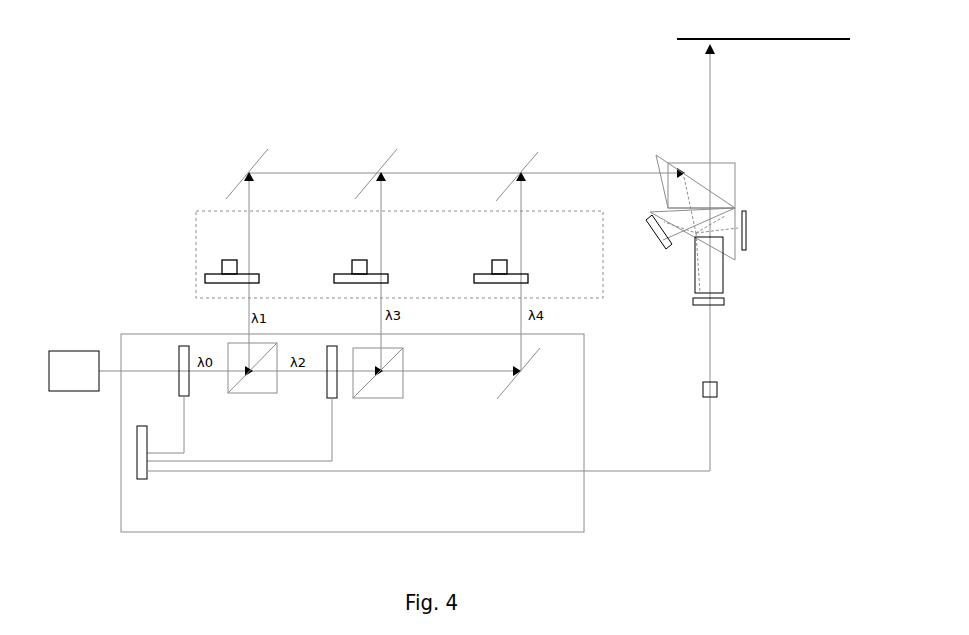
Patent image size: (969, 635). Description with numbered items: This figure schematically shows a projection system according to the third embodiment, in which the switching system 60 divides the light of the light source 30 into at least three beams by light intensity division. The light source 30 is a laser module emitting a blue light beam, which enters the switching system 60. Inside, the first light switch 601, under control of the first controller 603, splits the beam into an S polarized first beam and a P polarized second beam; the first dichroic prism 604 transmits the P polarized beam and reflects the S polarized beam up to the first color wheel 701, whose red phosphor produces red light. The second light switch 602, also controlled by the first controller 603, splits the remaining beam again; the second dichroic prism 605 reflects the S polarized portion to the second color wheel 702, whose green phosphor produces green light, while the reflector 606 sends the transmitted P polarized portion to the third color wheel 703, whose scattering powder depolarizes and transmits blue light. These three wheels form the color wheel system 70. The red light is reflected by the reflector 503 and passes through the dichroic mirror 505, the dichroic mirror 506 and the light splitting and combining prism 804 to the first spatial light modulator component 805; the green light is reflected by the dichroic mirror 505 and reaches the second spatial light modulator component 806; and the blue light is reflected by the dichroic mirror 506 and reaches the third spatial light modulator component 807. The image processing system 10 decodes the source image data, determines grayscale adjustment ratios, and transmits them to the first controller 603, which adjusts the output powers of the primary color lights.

The image processing system 10 is at (710, 395).
The light source 30 is at (73, 352).
The switching system 60 is at (128, 335).
The color wheel system 70 is at (203, 210).
The reflector 503 is at (260, 155).
The dichroic mirror 505 is at (392, 155).
The dichroic mirror 506 is at (533, 153).
The first light switch 601 is at (187, 395).
The second light switch 602 is at (333, 398).
The first controller 603 is at (143, 473).
The first dichroic prism 604 is at (255, 392).
The second dichroic prism 605 is at (397, 390).
The reflector 606 is at (507, 387).
The first color wheel 701 is at (255, 275).
The second color wheel 702 is at (388, 275).
The third color wheel 703 is at (528, 275).
The light splitting and combining prism 804 is at (735, 208).
The first spatial light modulator component 805 is at (672, 247).
The second spatial light modulator component 806 is at (708, 307).
The third spatial light modulator component 807 is at (743, 247).